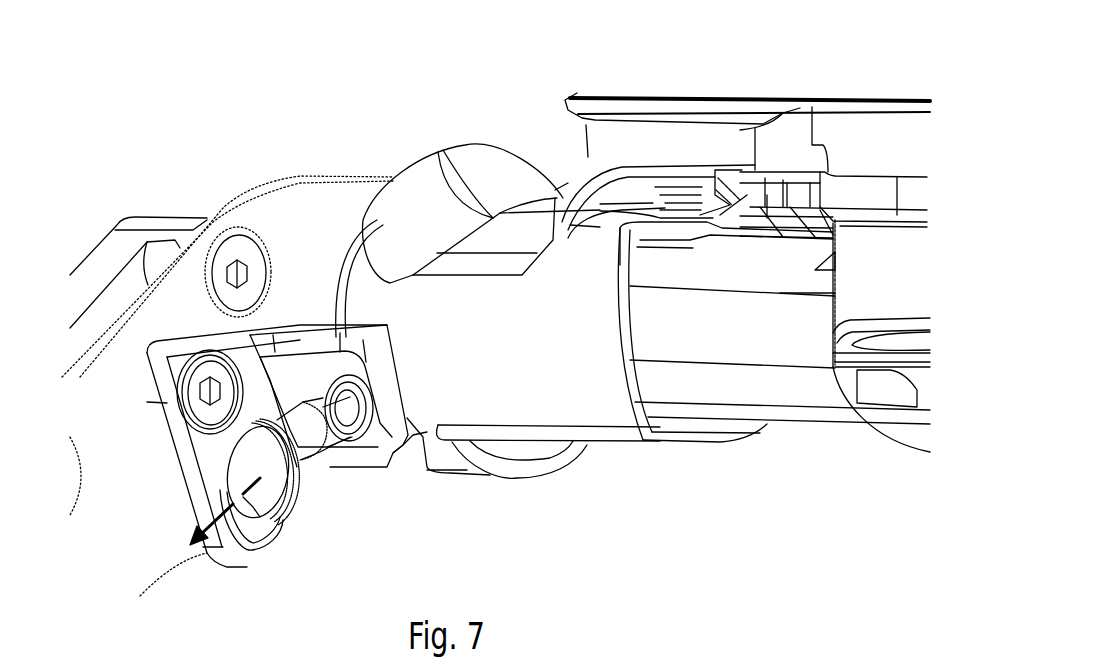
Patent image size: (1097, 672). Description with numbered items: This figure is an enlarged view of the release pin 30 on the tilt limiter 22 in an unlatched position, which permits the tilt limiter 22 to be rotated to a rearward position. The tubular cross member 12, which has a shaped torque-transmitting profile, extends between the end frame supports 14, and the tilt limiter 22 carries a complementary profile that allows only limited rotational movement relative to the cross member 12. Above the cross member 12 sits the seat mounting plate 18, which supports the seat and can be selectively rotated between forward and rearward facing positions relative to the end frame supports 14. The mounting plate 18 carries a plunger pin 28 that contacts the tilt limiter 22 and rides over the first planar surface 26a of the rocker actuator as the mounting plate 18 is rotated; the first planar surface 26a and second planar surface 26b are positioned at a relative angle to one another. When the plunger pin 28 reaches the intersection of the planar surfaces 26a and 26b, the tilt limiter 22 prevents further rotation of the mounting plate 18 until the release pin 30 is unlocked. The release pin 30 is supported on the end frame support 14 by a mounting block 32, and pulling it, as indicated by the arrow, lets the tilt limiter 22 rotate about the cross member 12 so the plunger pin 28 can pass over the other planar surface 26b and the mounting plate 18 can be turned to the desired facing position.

The cross member 12 is at (768, 400).
The end frame support 14 is at (289, 188).
The seat mounting plate 18 is at (685, 95).
The tilt limiter 22 is at (427, 172).
The first planar surface 26a is at (729, 190).
The second planar surface 26b is at (665, 207).
The plunger pin 28 is at (673, 178).
The release pin 30 is at (310, 463).
The mounting block 32 is at (392, 438).